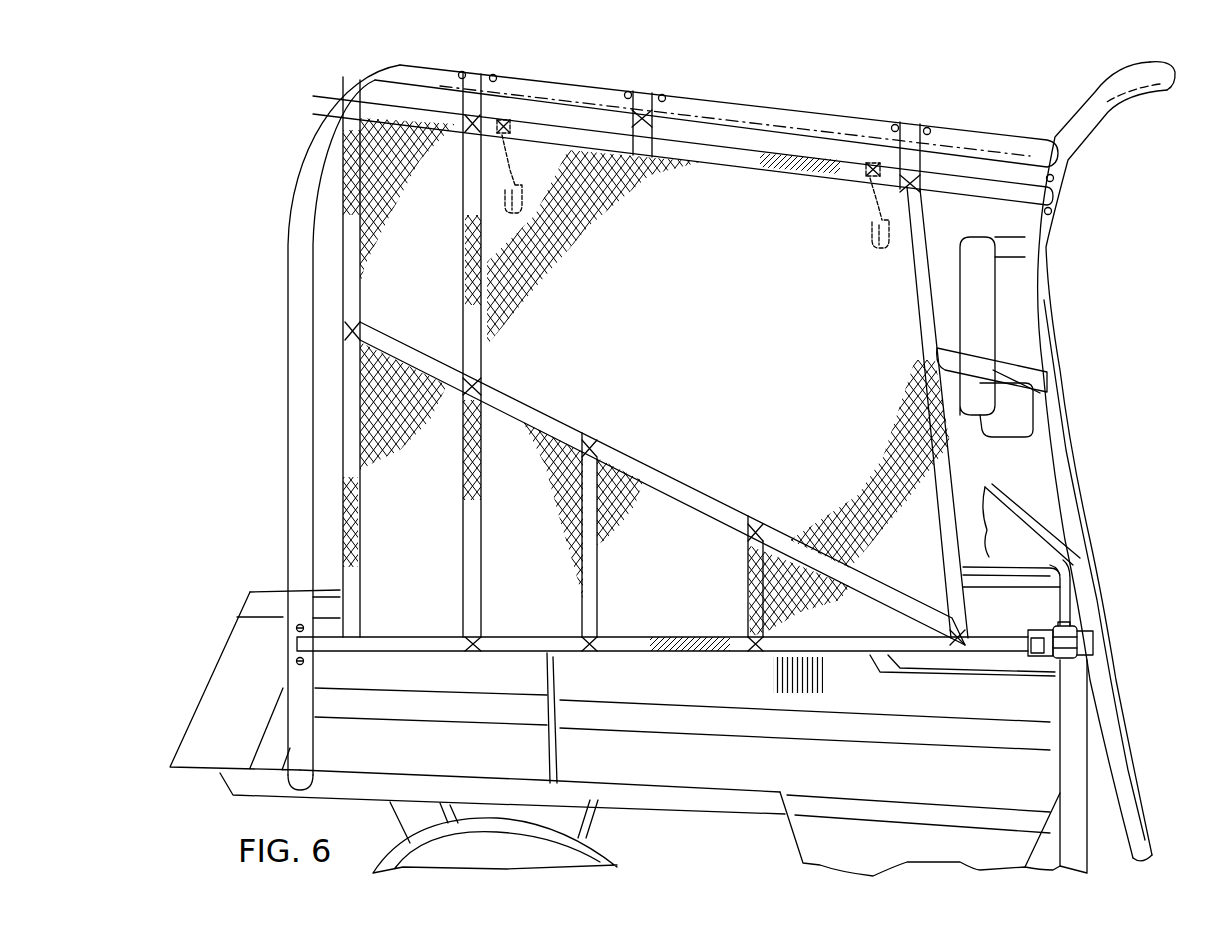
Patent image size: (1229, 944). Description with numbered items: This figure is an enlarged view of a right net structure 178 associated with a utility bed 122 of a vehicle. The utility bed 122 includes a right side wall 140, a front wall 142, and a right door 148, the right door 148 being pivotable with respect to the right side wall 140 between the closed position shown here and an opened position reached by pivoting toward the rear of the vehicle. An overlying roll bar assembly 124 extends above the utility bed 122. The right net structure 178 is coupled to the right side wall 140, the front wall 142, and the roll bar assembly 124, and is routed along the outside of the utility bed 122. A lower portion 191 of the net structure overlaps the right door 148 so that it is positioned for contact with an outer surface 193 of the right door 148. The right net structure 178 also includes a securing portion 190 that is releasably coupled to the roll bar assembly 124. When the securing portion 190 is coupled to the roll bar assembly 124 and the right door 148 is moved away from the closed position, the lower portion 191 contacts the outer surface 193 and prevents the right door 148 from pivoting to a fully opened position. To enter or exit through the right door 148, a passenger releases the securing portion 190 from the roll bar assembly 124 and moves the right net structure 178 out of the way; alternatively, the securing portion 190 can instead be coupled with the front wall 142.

The utility bed 122 is at (244, 540).
The roll bar assembly 124 is at (1007, 118).
The right net structure 178 is at (932, 222).
The front wall 142 is at (1026, 498).
The lower portion 191 is at (634, 655).
The securing portion 190 is at (1047, 663).
The right side wall 140 is at (220, 692).
The right door 148 is at (749, 760).
The outer surface 193 is at (843, 788).